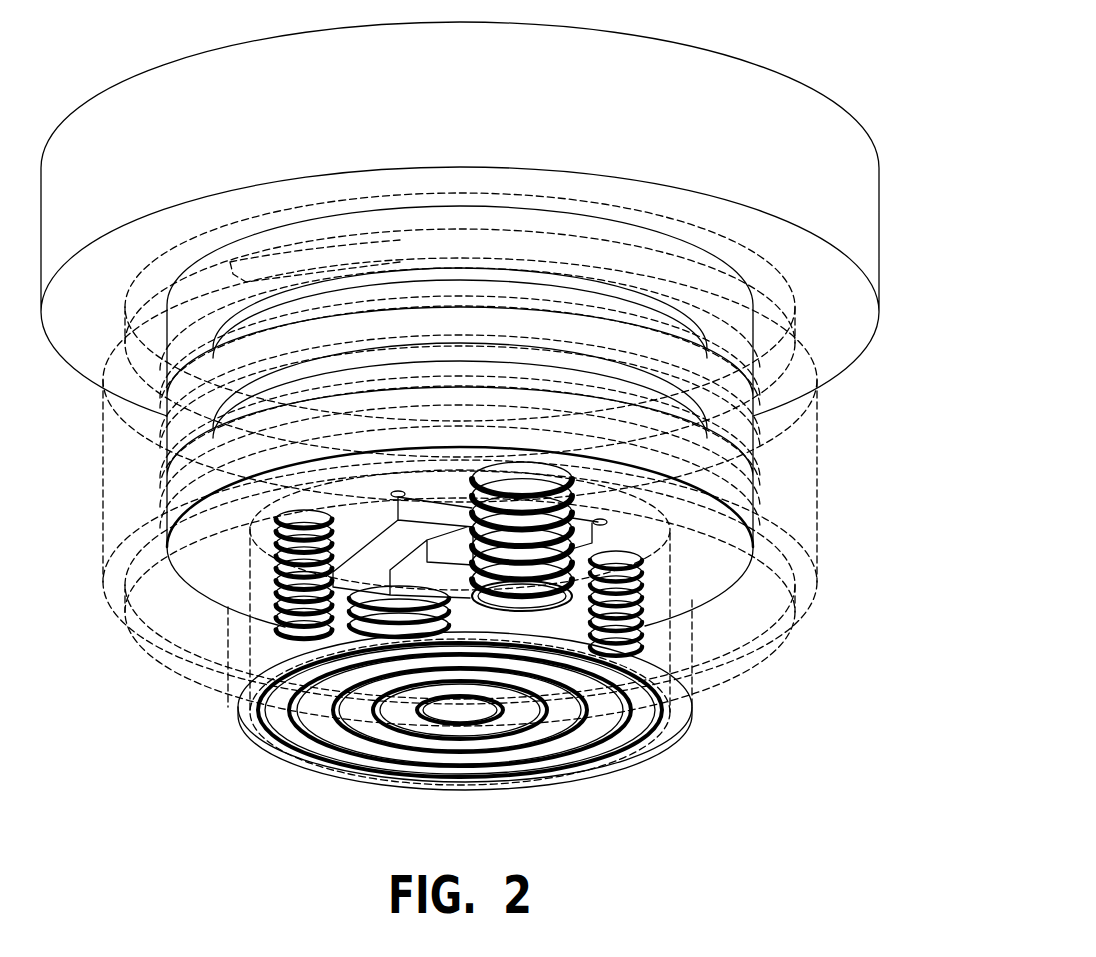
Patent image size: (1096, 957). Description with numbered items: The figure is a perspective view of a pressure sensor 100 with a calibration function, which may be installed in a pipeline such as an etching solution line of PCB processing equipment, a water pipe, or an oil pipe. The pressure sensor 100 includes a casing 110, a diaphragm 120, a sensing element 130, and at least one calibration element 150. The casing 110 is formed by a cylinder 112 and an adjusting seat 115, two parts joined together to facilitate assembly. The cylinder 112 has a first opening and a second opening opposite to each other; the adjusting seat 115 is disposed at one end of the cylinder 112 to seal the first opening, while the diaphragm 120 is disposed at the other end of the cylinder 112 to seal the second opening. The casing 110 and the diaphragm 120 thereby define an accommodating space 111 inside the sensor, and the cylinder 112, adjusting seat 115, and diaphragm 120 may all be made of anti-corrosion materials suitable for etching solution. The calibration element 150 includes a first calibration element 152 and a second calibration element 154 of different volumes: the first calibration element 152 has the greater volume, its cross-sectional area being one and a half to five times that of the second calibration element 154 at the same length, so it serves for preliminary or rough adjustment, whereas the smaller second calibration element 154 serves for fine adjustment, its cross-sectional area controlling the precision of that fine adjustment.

The pressure sensor 100 is at (485, 430).
The casing 110 is at (485, 374).
The accommodating space 111 is at (273, 642).
The cylinder 112 is at (803, 445).
The adjusting seat 115 is at (818, 145).
The diaphragm 120 is at (608, 752).
The sensing element 130 is at (347, 588).
The calibration element 150 is at (596, 593).
The first calibration element 152 is at (575, 545).
The second calibration element 154 is at (645, 612).